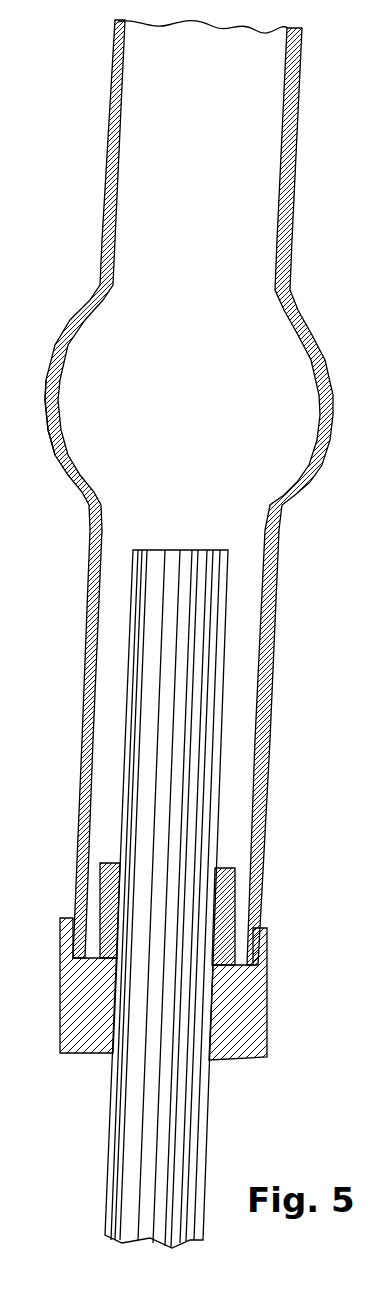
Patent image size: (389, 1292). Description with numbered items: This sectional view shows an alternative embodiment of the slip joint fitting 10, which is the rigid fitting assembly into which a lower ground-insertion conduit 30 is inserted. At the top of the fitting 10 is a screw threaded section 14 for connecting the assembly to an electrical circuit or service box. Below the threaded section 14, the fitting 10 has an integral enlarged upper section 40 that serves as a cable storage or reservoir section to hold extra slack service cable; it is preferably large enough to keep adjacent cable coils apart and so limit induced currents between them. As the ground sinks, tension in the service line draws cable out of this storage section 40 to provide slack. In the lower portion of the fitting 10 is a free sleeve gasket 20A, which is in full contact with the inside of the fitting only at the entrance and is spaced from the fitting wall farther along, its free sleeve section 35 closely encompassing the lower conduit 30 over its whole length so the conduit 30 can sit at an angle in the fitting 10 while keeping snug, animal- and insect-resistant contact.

The slip joint fitting assembly 10 is at (340, 210).
The screw threaded section 14 is at (300, 96).
The free sleeve gasket 20A is at (232, 1062).
The lower conduit 30 is at (183, 548).
The free sleeve section 35 is at (237, 893).
The enlarged upper section 40 is at (62, 335).